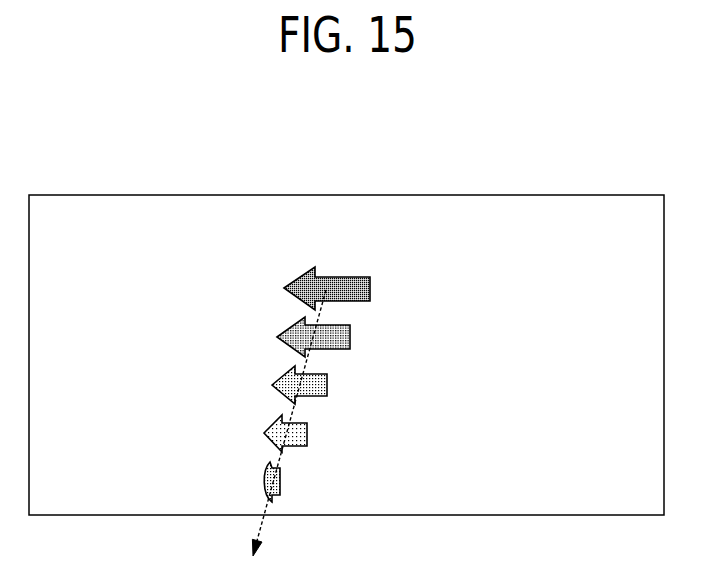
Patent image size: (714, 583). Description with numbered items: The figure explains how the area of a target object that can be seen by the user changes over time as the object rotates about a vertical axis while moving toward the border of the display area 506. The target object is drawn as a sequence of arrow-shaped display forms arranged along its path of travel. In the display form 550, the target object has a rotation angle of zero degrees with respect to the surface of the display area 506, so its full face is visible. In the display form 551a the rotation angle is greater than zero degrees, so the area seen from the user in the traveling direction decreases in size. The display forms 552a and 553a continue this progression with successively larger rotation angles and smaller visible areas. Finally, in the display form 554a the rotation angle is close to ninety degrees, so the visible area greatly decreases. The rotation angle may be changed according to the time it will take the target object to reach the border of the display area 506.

The display area 506 is at (505, 195).
The display form 550 is at (371, 288).
The display form 551a is at (351, 337).
The display form 552a is at (328, 385).
The display form 553a is at (308, 433).
The display form 554a is at (281, 483).